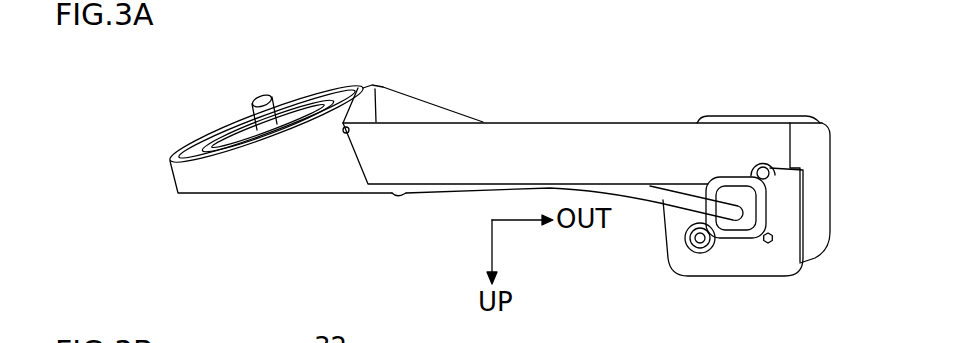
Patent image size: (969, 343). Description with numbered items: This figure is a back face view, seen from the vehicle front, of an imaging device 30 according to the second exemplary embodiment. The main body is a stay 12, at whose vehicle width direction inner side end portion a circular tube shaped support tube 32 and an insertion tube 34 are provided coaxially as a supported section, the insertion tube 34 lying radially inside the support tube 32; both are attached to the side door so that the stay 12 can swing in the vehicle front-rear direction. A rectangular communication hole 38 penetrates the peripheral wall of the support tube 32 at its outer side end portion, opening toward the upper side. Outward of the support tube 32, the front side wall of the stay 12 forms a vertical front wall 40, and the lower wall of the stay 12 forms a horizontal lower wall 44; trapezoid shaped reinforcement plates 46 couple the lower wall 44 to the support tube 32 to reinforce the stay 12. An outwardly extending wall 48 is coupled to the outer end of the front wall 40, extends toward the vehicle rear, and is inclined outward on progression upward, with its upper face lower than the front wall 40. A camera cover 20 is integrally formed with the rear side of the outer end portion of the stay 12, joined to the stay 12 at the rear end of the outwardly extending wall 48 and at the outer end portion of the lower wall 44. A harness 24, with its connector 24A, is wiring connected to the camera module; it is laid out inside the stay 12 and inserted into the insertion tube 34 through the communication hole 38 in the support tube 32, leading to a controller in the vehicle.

The stay 12 is at (622, 122).
The camera cover 20 is at (694, 277).
The harness 24 is at (462, 197).
The connector 24A is at (738, 236).
The imaging device 30 is at (577, 75).
The support tube 32 is at (270, 190).
The insertion tube 34 is at (204, 147).
The communication hole 38 is at (403, 197).
The front wall 40 is at (545, 130).
The lower wall 44 is at (668, 121).
The reinforcement plates 46 is at (428, 103).
The outwardly extending wall 48 is at (810, 132).